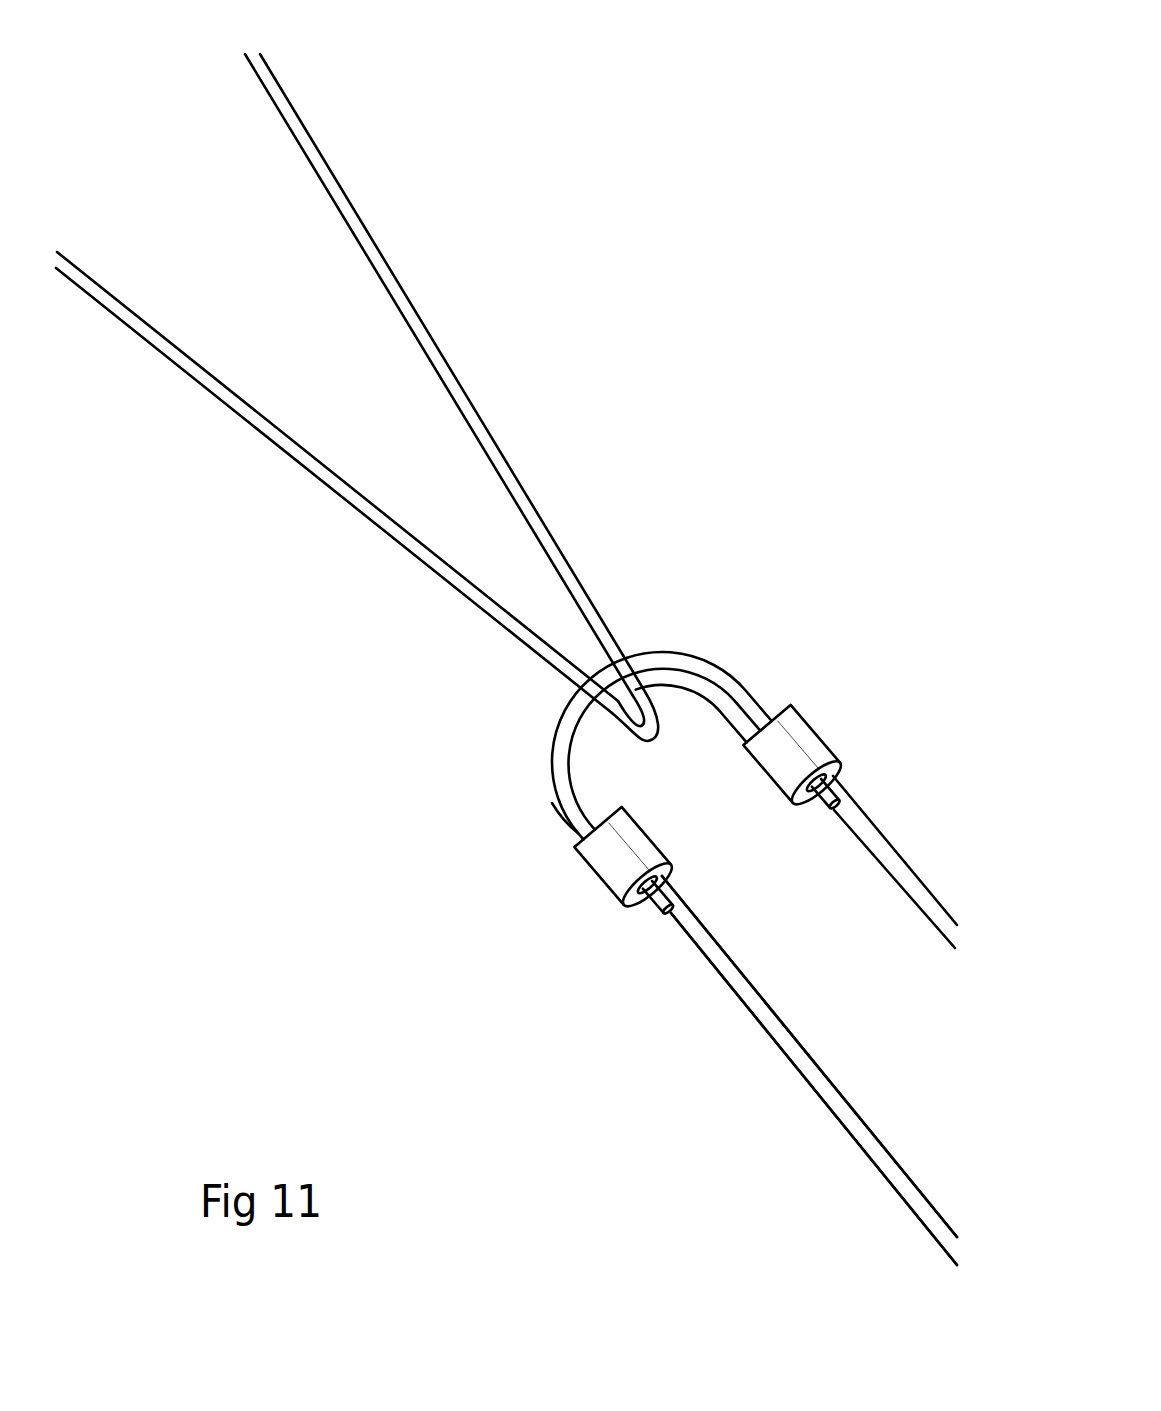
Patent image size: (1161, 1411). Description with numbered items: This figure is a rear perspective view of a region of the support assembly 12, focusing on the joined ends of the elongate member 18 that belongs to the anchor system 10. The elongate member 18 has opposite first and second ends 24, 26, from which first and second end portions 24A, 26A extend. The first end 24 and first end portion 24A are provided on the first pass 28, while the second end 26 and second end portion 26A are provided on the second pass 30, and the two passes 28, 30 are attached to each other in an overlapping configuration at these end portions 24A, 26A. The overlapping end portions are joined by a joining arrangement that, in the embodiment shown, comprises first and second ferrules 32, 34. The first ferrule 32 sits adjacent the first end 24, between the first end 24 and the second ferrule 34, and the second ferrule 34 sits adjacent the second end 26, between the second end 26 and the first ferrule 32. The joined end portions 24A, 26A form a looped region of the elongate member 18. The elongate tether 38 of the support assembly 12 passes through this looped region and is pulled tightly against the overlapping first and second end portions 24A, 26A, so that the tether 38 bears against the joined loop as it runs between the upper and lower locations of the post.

The anchor system 10 is at (770, 1112).
The support assembly 12 is at (474, 277).
The elongate member 18 is at (695, 947).
The first end 24 is at (831, 812).
The first end portion 24A is at (576, 757).
The second end 26 is at (668, 915).
The second end portion 26A is at (689, 658).
The first pass 28 is at (747, 1006).
The second pass 30 is at (873, 818).
The first ferrule 32 is at (808, 735).
The second ferrule 34 is at (600, 860).
The elongate tether 38 is at (240, 418).